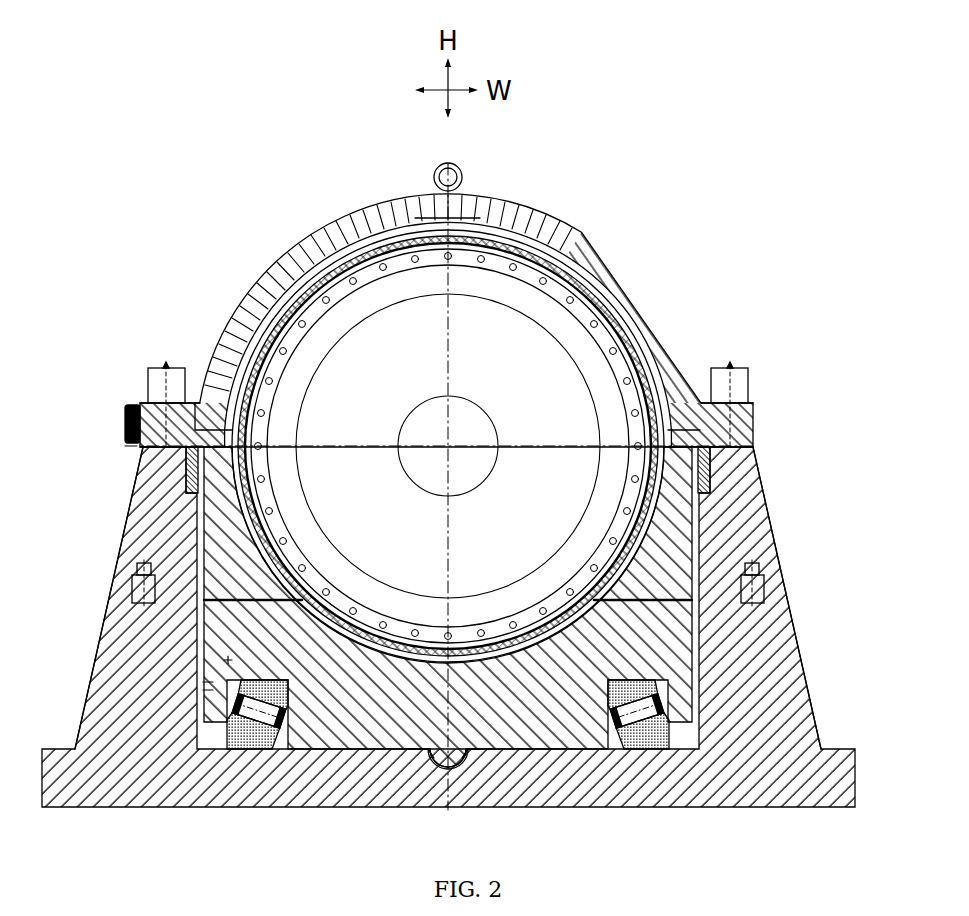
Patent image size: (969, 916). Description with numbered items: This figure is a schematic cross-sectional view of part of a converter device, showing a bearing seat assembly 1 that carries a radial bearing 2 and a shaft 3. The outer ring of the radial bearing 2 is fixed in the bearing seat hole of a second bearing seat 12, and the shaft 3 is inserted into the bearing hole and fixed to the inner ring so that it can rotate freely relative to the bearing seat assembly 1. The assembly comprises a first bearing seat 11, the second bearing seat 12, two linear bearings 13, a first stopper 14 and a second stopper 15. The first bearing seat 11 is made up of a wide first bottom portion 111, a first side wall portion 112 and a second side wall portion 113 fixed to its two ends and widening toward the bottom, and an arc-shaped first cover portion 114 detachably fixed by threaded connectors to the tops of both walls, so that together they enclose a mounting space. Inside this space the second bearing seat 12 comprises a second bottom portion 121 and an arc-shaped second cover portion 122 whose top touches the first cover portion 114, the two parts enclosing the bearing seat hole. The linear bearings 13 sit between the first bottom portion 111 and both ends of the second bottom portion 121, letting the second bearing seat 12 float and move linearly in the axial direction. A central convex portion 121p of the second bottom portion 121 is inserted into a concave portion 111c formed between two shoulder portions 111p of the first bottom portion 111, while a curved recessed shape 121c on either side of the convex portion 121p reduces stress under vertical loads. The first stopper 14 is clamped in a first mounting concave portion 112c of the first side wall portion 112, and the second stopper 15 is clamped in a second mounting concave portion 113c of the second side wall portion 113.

The bearing seat assembly 1 is at (143, 400).
The radial bearing 2 is at (598, 303).
The shaft 3 is at (593, 423).
The first bearing seat 11 is at (250, 385).
The second bearing seat 12 is at (275, 273).
The linear bearings 13 is at (263, 745).
The first stopper 14 is at (128, 440).
The second stopper 15 is at (740, 483).
The first bottom portion 111 is at (533, 790).
The concave portion 111c is at (432, 708).
The shoulder portions 111p is at (440, 753).
The first side wall portion 112 is at (110, 635).
The first mounting concave portion 112c is at (186, 472).
The second side wall portion 113 is at (800, 655).
The second mounting concave portion 113c is at (710, 458).
The first cover portion 114 is at (203, 387).
The second bottom portion 121 is at (222, 625).
The recessed shape 121c is at (415, 705).
The convex portion 121p is at (468, 716).
The second cover portion 122 is at (257, 337).